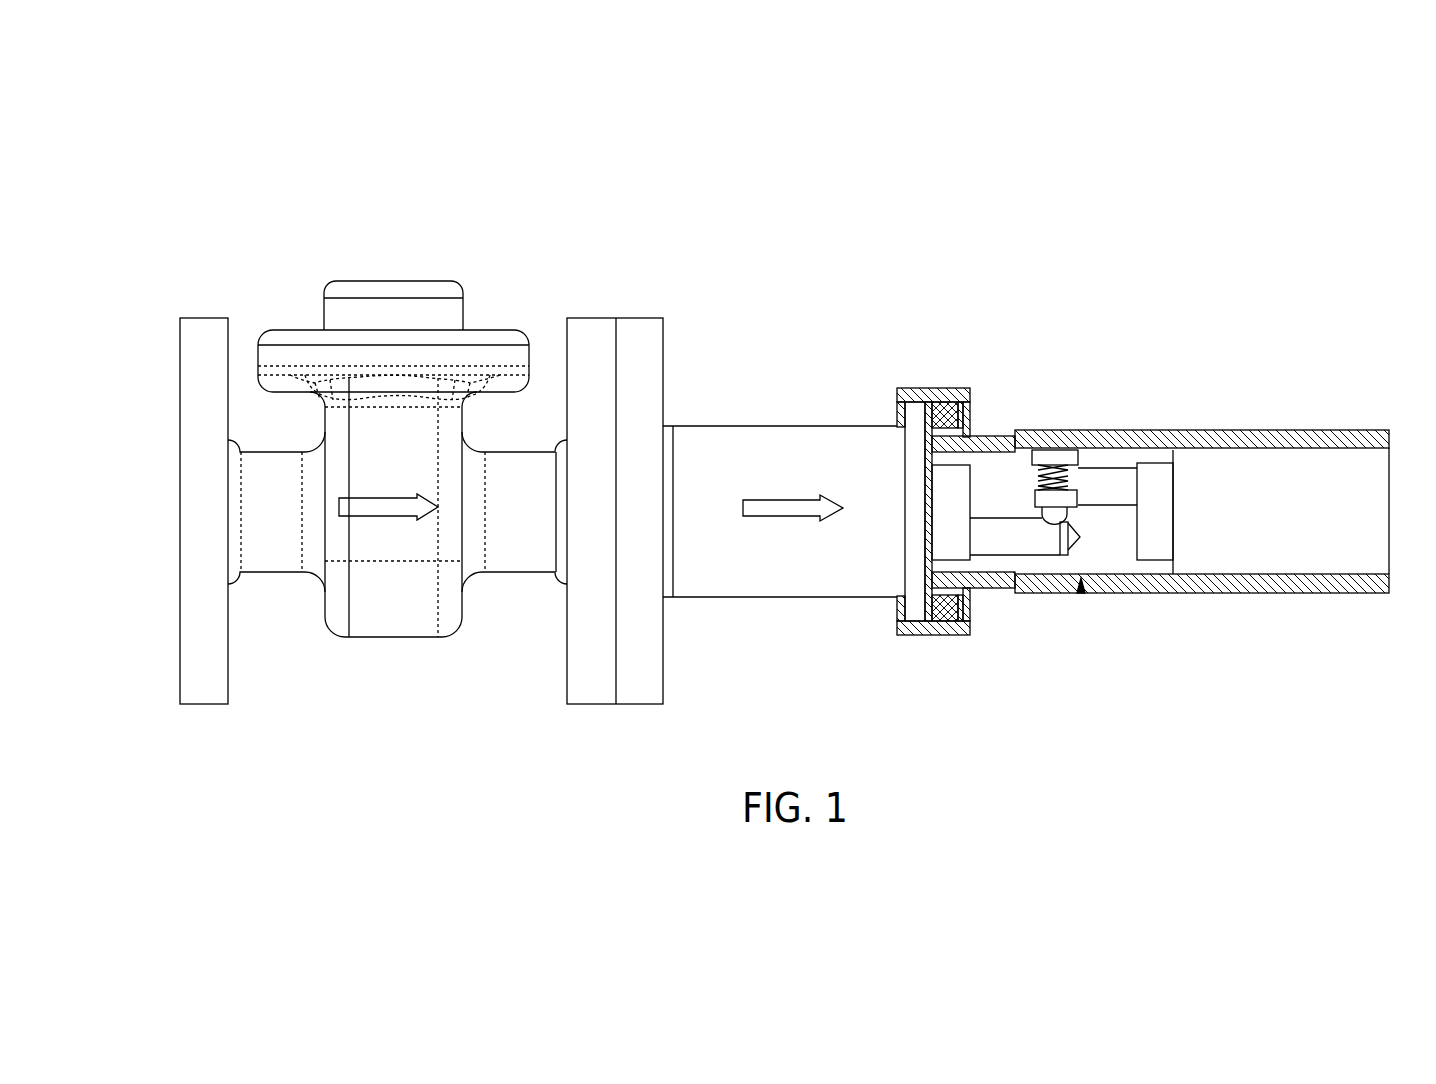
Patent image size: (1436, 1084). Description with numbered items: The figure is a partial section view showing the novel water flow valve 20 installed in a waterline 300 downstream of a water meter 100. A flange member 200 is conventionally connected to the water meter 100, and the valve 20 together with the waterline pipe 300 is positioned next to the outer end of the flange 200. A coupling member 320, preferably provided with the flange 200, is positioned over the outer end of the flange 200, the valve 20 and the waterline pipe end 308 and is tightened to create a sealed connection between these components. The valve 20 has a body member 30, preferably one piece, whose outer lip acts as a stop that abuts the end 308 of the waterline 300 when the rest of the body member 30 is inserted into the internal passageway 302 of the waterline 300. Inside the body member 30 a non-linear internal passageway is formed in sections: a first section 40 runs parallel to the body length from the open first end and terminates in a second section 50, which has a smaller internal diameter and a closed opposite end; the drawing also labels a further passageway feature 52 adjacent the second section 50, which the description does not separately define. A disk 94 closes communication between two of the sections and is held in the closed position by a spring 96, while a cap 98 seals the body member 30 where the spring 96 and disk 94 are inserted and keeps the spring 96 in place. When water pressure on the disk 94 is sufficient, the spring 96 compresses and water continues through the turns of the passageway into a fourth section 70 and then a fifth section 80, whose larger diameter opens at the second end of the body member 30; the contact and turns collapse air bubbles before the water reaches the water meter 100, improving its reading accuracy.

The water meter 100 is at (497, 235).
The flange member 200 is at (737, 328).
The waterline 300 is at (1233, 430).
The internal passageway of waterline 302 is at (1282, 553).
The end of waterline 308 is at (968, 424).
The coupling member 320 is at (930, 388).
The water flow valve 20 is at (1081, 596).
The body member 30 is at (1107, 557).
The first section 40 is at (950, 548).
The second section 50 is at (1015, 553).
The tube 52 is at (1057, 518).
The fourth section 70 is at (1118, 437).
The fifth section 80 is at (1158, 552).
The disk 94 is at (1103, 528).
The spring 96 is at (1150, 473).
The cap 98 is at (1066, 450).